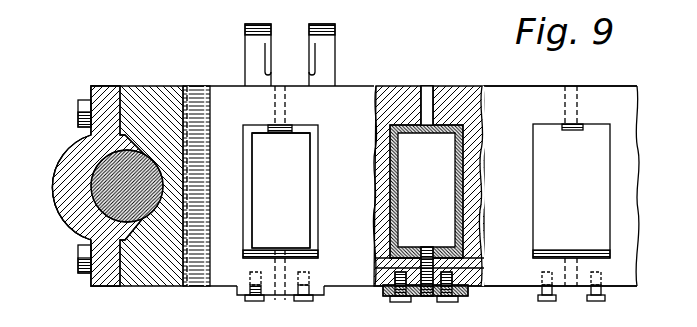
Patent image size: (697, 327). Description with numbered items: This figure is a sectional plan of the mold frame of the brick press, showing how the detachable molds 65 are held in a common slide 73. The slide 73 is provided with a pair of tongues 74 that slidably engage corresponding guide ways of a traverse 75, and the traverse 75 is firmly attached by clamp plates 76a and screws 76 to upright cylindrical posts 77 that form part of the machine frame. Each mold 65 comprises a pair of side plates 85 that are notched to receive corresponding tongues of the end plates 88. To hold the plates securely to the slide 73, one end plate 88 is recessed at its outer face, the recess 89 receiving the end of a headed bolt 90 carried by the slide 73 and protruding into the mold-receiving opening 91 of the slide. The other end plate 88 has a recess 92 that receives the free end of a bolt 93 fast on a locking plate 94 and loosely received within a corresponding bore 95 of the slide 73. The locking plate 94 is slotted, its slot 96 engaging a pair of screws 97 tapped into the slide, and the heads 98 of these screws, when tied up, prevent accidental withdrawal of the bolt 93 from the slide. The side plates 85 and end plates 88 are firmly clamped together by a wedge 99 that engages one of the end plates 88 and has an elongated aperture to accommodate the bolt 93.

The mold 65 is at (353, 190).
The slide 73 is at (560, 186).
The tongues 74 is at (198, 96).
The traverse 75 is at (145, 94).
The screws 76 is at (78, 118).
The clamp plates 76a is at (100, 90).
The upright cylindrical posts 77 is at (96, 190).
The side plates 85 is at (310, 168).
The end plates 88 is at (298, 127).
The recess 89 is at (428, 186).
The headed bolt 90 is at (428, 96).
The mold-receiving opening 91 is at (534, 196).
The recess 92 is at (424, 247).
The bolt 93 is at (470, 259).
The locking plate 94 is at (324, 292).
The bore 95 is at (470, 269).
The slot 96 is at (262, 298).
The screws 97 is at (426, 297).
The heads 98 is at (398, 299).
The wedge 99 is at (318, 255).